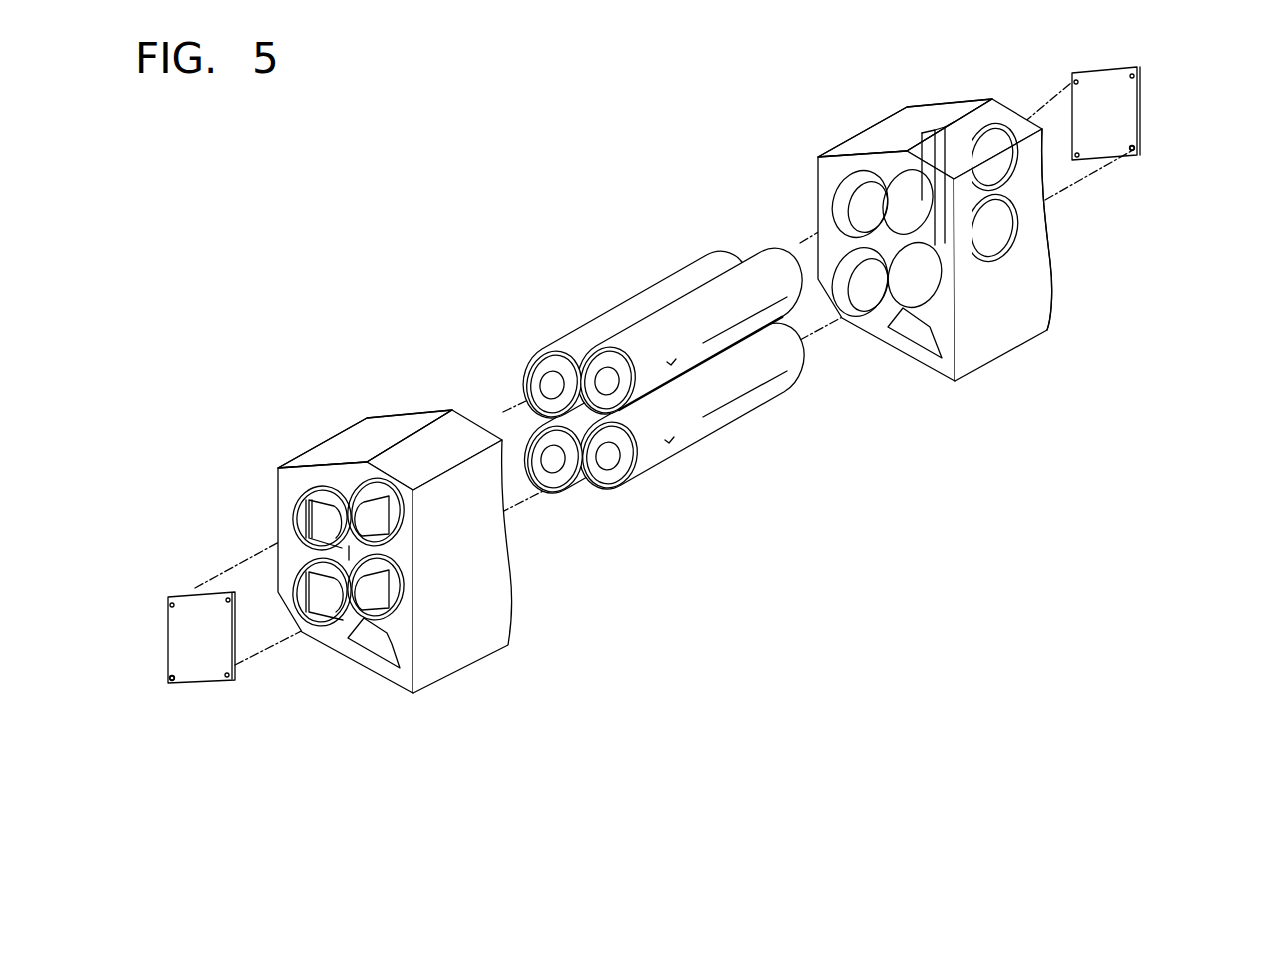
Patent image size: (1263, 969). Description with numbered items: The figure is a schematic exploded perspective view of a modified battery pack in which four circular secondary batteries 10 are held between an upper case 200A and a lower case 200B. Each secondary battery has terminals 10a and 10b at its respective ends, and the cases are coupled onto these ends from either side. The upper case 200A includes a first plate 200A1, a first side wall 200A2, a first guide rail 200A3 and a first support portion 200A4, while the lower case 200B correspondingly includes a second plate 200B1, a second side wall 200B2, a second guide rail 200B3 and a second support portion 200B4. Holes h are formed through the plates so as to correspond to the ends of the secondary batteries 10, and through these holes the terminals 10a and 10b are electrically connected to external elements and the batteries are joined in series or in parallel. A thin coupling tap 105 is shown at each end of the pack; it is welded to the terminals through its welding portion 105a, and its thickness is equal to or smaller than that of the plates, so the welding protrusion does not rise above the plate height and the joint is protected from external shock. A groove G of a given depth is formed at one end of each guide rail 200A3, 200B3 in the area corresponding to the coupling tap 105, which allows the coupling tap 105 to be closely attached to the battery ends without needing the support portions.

The secondary batteries 10 is at (648, 362).
The terminal 10a is at (548, 382).
The terminal 10b is at (727, 262).
The coupling tap 105 is at (201, 674).
The welding portion 105a is at (172, 681).
The upper case 200A is at (362, 554).
The first plate 200A1 is at (291, 488).
The first side wall 200A2 is at (353, 440).
The first guide rail 200A3 is at (352, 508).
The first support portion 200A4 is at (305, 511).
The groove G is at (346, 558).
The holes h is at (326, 604).
The lower case 200B is at (951, 234).
The second plate 200B1 is at (1050, 272).
The second side wall 200B2 is at (928, 106).
The second guide rail 200B3 is at (862, 165).
The second support portion 200B4 is at (920, 140).